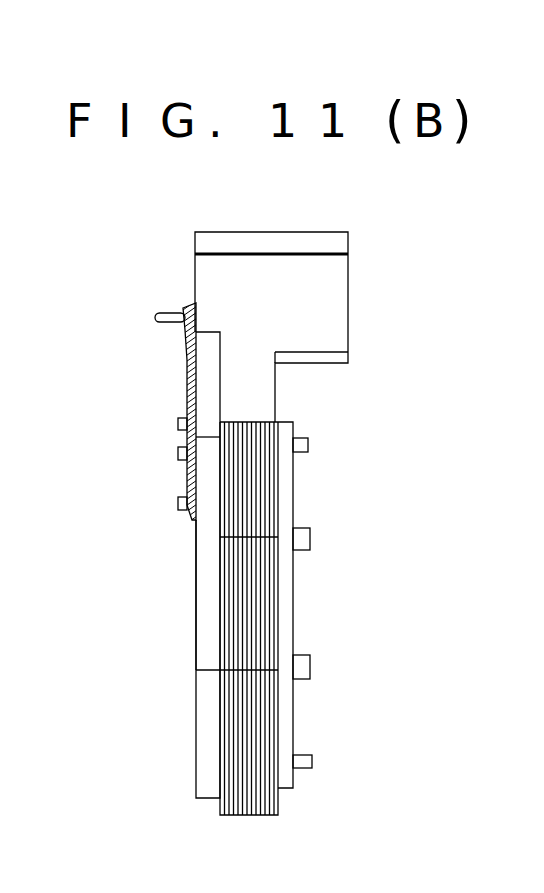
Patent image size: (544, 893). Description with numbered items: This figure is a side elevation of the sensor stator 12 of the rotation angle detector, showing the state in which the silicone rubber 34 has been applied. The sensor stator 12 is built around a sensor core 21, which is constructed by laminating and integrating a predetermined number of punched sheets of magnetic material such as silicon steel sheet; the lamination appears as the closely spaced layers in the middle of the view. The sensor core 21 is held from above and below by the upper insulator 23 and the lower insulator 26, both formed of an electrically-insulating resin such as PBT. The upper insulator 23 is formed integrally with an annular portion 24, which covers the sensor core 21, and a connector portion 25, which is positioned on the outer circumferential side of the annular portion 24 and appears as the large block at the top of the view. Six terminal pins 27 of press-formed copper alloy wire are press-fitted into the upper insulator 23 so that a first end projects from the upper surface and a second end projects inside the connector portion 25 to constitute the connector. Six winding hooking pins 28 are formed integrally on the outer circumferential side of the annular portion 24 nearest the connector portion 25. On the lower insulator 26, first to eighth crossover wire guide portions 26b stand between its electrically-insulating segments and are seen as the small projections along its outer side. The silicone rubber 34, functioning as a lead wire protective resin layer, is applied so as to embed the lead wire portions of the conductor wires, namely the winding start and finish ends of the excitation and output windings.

The sensor stator 12 is at (152, 245).
The sensor core 21 is at (283, 640).
The upper insulator 23 is at (195, 533).
The annular portion 24 is at (190, 605).
The connector portion 25 is at (345, 293).
The lower insulator 26 is at (302, 595).
The crossover wire guide portions 26b is at (318, 444).
The terminal pins 27 is at (157, 314).
The winding hooking pins 28 is at (177, 426).
The silicone rubber 34 is at (182, 357).